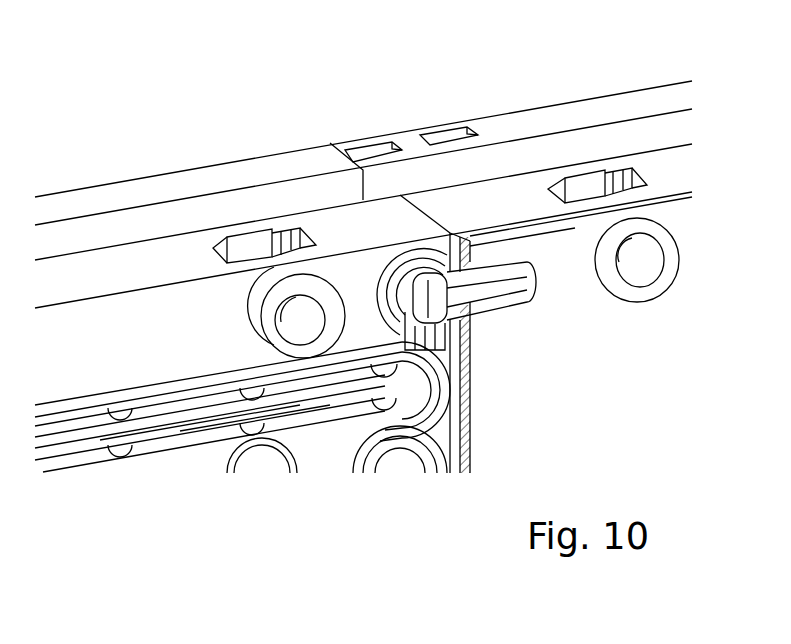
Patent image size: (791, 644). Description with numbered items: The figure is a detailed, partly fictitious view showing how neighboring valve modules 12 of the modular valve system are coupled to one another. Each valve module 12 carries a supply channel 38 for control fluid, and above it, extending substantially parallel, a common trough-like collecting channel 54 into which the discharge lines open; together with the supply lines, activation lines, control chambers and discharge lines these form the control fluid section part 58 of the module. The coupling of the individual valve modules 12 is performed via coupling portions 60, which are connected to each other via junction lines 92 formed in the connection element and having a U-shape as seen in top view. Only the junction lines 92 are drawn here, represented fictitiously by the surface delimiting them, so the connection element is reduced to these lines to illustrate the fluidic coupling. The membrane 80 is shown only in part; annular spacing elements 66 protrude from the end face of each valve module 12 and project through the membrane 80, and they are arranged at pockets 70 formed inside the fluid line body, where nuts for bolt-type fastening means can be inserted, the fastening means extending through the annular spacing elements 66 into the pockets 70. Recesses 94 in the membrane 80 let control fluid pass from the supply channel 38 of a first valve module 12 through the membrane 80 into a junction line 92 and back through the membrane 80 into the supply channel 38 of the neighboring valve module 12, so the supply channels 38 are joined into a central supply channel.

The valve module 12 is at (88, 262).
The supply channel 38 is at (360, 408).
The collecting channel 54 is at (298, 385).
The control fluid section part 58 is at (190, 488).
The coupling portion 60 is at (412, 305).
The spacing element 66 is at (335, 300).
The pocket 70 is at (250, 256).
The membrane 80 is at (498, 236).
The junction line 92 is at (467, 293).
The recess 94 is at (516, 260).